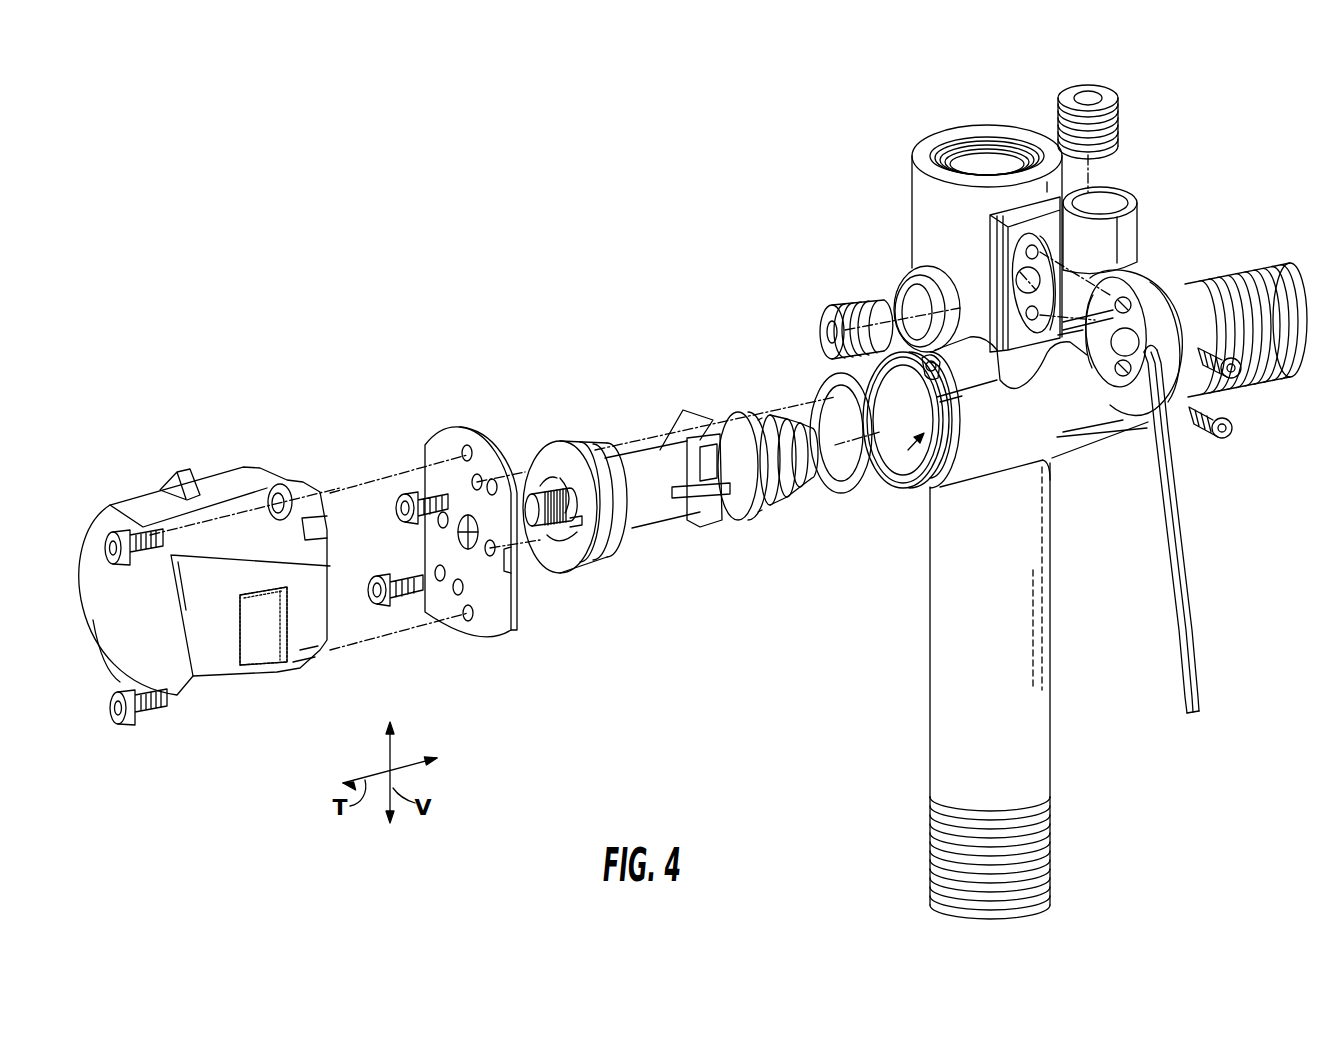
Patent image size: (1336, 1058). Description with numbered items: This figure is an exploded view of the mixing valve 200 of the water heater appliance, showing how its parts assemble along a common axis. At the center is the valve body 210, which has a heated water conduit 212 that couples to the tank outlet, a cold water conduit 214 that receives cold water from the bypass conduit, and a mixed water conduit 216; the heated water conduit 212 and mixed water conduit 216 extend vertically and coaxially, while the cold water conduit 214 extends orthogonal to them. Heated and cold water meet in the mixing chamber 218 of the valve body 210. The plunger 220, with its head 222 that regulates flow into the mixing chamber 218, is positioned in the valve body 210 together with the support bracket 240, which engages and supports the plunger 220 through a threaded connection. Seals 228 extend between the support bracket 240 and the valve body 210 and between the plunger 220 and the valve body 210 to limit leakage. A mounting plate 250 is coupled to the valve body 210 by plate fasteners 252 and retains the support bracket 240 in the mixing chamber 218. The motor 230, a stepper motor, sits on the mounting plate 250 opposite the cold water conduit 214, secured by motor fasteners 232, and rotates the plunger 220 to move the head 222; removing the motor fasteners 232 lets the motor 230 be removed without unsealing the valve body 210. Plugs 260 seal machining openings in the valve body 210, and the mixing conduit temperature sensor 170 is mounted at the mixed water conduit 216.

The mixing valve 200 is at (1250, 103).
The mixing conduit temperature sensor 170 is at (1093, 353).
The valve body 210 is at (1050, 465).
The heated water conduit 212 is at (943, 687).
The cold water conduit 214 is at (1177, 290).
The mixed water conduit 216 is at (923, 233).
The mixing chamber 218 is at (893, 482).
The plunger 220 is at (540, 477).
The head 222 is at (743, 410).
The seals 228 is at (850, 490).
The motor 230 is at (101, 523).
The motor fasteners 232 is at (115, 562).
The support bracket 240 is at (648, 510).
The mounting plate 250 is at (488, 633).
The plate fasteners 252 is at (398, 573).
The plugs 260 is at (1087, 84).